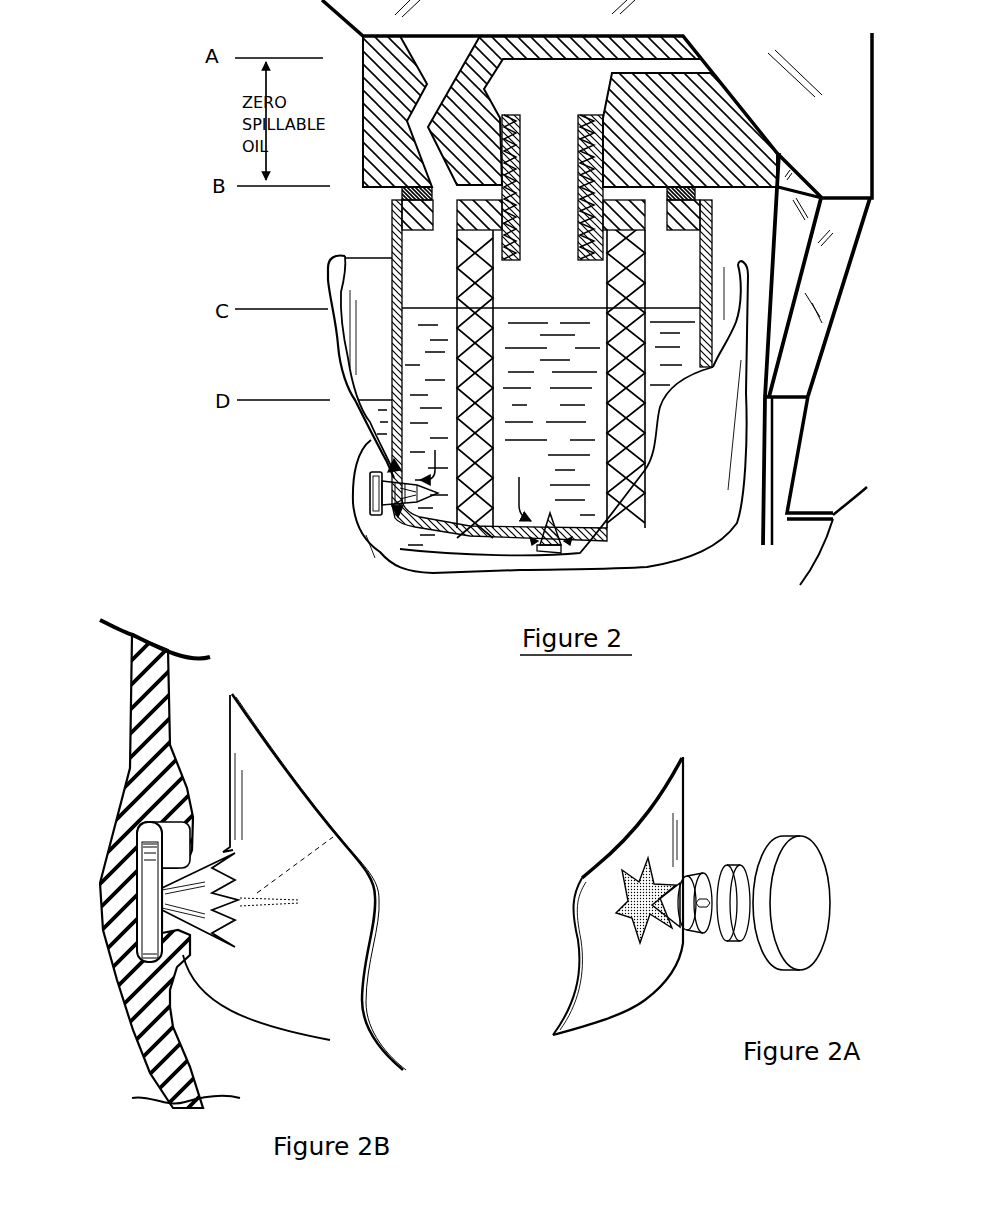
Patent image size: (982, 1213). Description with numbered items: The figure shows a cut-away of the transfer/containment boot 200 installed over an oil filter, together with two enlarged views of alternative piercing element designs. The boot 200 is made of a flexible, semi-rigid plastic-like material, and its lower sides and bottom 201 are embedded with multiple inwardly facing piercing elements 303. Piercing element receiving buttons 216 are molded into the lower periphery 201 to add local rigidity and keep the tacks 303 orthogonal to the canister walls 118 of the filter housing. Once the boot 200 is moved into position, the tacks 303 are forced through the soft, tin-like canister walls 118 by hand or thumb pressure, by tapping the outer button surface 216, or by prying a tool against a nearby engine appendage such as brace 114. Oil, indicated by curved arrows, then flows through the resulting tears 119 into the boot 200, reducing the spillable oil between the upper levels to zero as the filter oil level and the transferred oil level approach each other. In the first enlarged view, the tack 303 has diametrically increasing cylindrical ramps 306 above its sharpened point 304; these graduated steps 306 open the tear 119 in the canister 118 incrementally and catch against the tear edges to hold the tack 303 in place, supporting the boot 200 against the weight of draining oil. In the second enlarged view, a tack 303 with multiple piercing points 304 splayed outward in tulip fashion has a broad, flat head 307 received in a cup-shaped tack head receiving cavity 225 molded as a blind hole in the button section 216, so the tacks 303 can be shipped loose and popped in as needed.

In FIG. 2, the transfer/containment boot 200 is at (178, 341).
In FIG. 2, the lower sides and bottom 201 is at (353, 413).
In FIG. 2B, the lower sides and bottom 201 is at (130, 697).
In FIG. 2, the brace 114 is at (780, 450).
In FIG. 2, the canister walls 118 is at (427, 532).
In FIG. 2A, the canister walls 118 is at (660, 967).
In FIG. 2B, the canister walls 118 is at (280, 805).
In FIG. 2, the tears 119 is at (387, 455).
In FIG. 2A, the tears 119 is at (633, 867).
In FIG. 2, the piercing element receiving button 216 is at (356, 500).
In FIG. 2B, the piercing element receiving button 216 is at (137, 900).
In FIG. 2B, the tack head receiving cavity 225 is at (115, 975).
In FIG. 2, the piercing element 303 is at (373, 517).
In FIG. 2A, the piercing element 303 is at (797, 873).
In FIG. 2B, the piercing element 303 is at (186, 912).
In FIG. 2, the sharpened point 304 is at (551, 533).
In FIG. 2A, the sharpened point 304 is at (640, 912).
In FIG. 2B, the sharpened point 304 is at (340, 833).
In FIG. 2A, the diametrically increasing cylindrical ramps 306 is at (717, 870).
In FIG. 2B, the head 307 is at (150, 877).